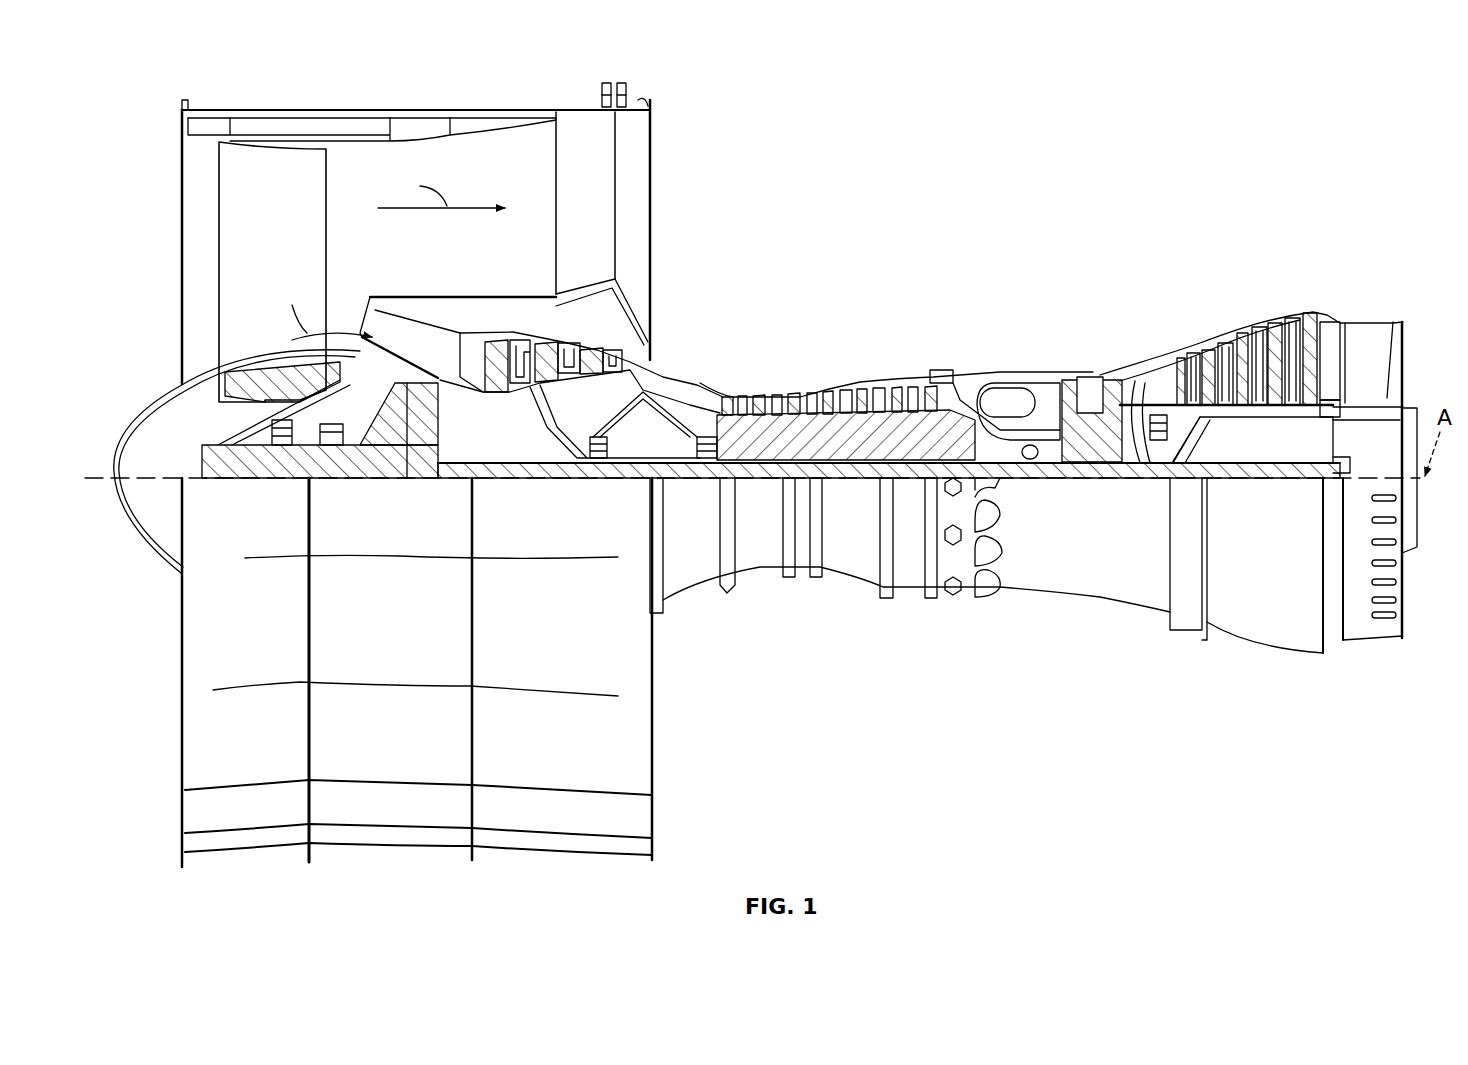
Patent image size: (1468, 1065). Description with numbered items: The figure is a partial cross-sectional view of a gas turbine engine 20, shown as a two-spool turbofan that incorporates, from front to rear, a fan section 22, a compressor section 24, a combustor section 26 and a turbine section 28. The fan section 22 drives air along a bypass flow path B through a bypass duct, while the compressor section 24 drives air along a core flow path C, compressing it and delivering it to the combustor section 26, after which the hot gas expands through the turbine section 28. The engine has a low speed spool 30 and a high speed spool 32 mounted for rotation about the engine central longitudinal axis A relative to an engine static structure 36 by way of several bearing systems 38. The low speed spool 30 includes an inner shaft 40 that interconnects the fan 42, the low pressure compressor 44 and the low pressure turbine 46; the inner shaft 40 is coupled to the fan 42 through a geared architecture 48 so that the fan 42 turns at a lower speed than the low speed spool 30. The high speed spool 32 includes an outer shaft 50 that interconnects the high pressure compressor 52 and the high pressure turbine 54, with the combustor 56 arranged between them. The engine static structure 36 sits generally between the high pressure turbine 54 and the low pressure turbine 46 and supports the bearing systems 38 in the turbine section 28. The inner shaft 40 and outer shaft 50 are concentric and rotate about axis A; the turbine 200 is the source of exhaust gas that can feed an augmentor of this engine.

The gas turbine engine 20 is at (1222, 146).
The fan section 22 is at (290, 104).
The compressor section 24 is at (842, 336).
The combustor section 26 is at (1006, 336).
The turbine section 28 is at (1152, 314).
The low speed spool 30 is at (872, 484).
The high speed spool 32 is at (918, 432).
The engine static structure 36 is at (912, 596).
The bearing systems 38 is at (285, 434).
The inner shaft 40 is at (667, 470).
The fan 42 is at (279, 272).
The low pressure compressor 44 is at (565, 356).
The low pressure turbine 46 is at (1263, 340).
The geared architecture 48 is at (420, 447).
The outer shaft 50 is at (1037, 455).
The high pressure compressor 52 is at (833, 447).
The high pressure turbine 54 is at (1092, 374).
The combustor 56 is at (1016, 396).
The turbine 200 is at (1385, 693).